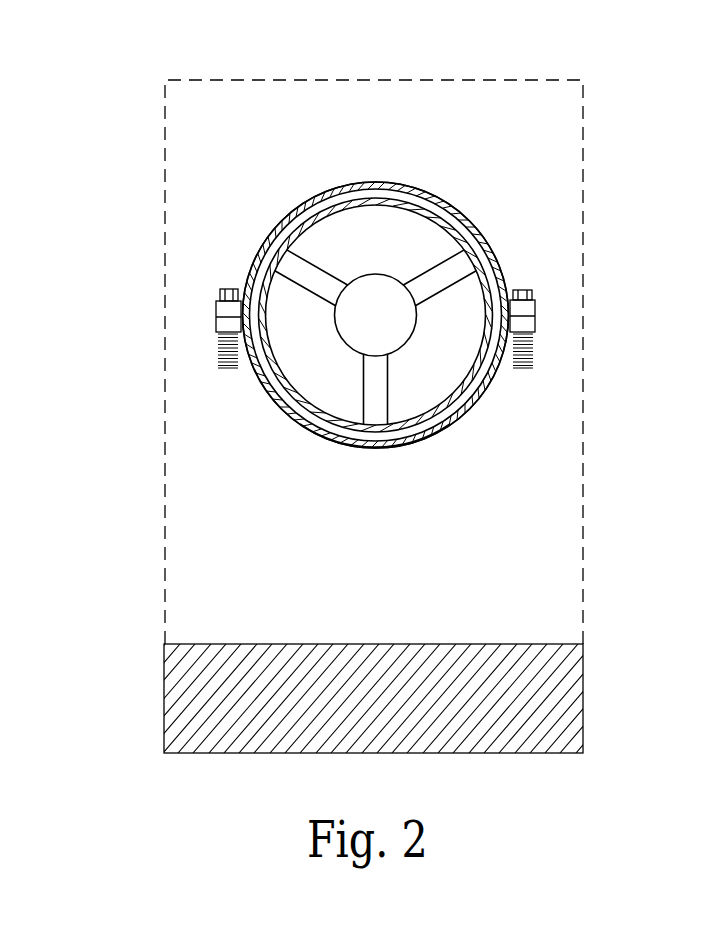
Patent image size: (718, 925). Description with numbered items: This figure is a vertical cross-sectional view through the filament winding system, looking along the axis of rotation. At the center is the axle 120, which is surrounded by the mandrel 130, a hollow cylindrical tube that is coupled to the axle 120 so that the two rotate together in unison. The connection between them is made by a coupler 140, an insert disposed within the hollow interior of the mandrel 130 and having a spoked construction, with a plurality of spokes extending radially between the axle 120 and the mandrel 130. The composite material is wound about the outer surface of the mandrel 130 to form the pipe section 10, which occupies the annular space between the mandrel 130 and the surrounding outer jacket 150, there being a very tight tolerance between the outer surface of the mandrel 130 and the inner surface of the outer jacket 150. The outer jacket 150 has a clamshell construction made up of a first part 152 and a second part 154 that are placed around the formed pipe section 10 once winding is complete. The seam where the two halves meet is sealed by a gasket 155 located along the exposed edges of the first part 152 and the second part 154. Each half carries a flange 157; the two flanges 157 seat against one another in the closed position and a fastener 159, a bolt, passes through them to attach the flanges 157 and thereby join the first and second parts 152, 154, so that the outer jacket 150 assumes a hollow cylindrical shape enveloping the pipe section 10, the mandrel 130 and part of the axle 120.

The pipe section 10 is at (255, 260).
The axle 120 is at (353, 337).
The mandrel 130 is at (477, 223).
The coupler 140 is at (387, 383).
The outer jacket 150 is at (307, 200).
The first part 152 is at (378, 181).
The second part 154 is at (327, 443).
The gasket 155 is at (537, 308).
The flange 157 is at (535, 325).
The fastener 159 is at (213, 350).